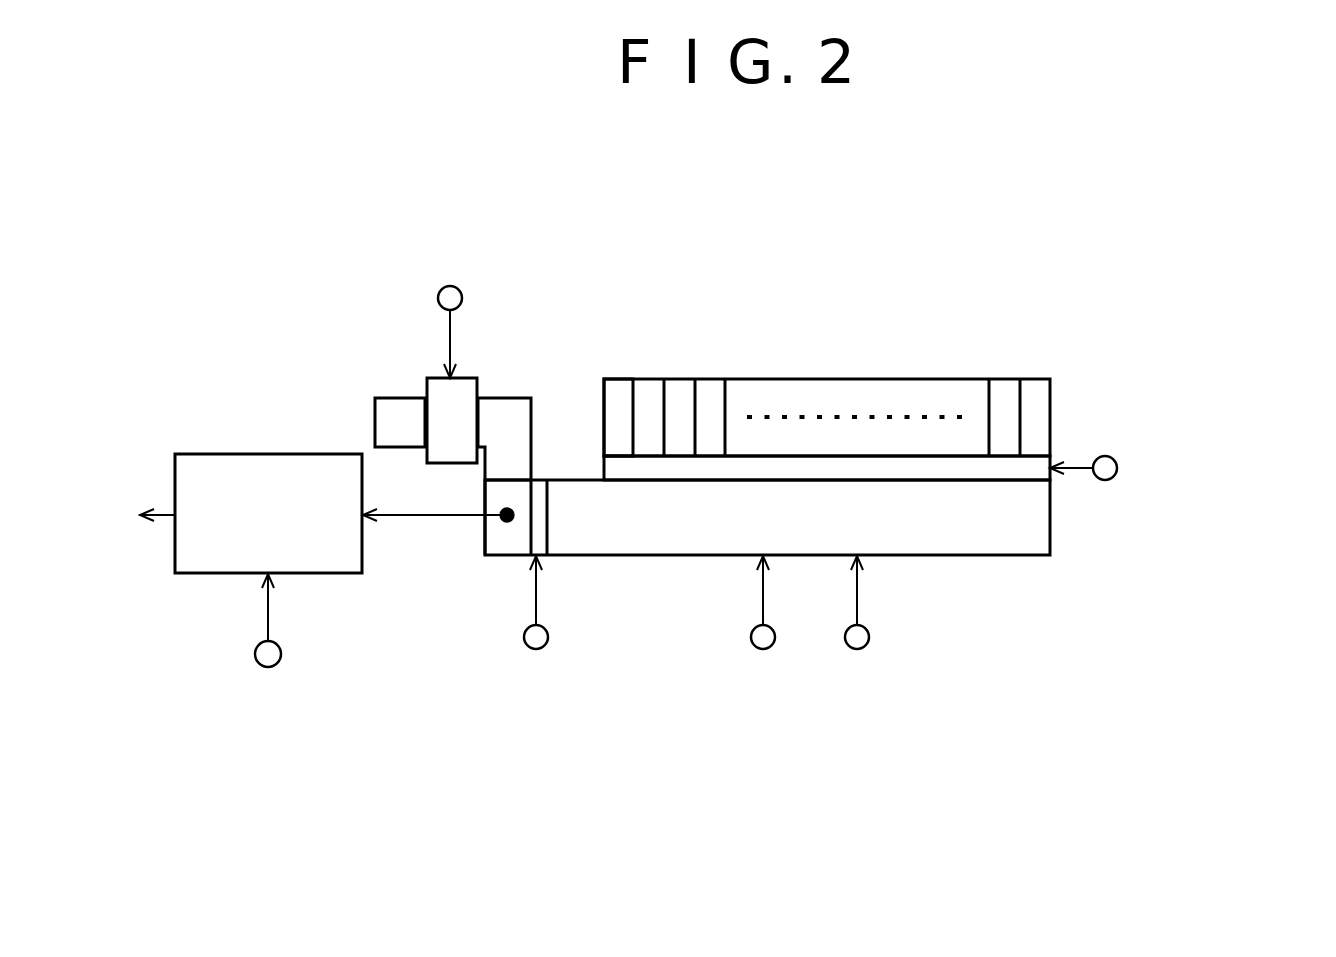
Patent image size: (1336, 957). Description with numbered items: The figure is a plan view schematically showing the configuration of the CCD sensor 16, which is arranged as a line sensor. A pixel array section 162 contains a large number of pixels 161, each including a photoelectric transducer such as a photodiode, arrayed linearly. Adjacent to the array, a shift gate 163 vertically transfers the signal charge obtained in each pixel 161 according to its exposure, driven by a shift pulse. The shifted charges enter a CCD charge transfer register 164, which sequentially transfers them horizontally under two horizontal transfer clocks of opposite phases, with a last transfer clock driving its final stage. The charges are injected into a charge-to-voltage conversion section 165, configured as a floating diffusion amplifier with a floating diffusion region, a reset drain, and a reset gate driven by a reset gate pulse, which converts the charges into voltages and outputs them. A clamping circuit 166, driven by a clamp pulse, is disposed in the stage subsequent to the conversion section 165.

The CCD sensor 16 is at (955, 252).
The pixel 161 is at (620, 378).
The pixel array section 162 is at (836, 378).
The shift gate 163 is at (955, 465).
The CCD charge transfer register 164 is at (617, 535).
The charge-to-voltage conversion section 165 is at (452, 550).
The clamping circuit 166 is at (270, 453).